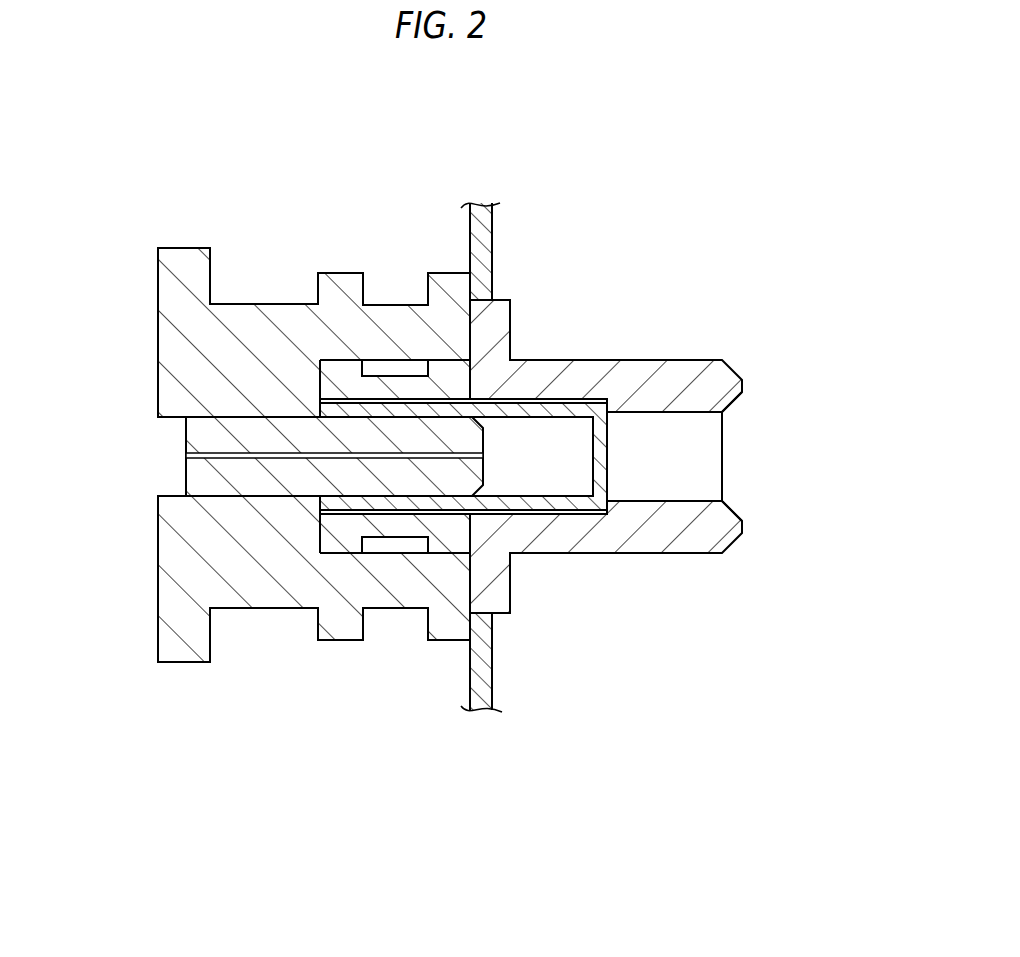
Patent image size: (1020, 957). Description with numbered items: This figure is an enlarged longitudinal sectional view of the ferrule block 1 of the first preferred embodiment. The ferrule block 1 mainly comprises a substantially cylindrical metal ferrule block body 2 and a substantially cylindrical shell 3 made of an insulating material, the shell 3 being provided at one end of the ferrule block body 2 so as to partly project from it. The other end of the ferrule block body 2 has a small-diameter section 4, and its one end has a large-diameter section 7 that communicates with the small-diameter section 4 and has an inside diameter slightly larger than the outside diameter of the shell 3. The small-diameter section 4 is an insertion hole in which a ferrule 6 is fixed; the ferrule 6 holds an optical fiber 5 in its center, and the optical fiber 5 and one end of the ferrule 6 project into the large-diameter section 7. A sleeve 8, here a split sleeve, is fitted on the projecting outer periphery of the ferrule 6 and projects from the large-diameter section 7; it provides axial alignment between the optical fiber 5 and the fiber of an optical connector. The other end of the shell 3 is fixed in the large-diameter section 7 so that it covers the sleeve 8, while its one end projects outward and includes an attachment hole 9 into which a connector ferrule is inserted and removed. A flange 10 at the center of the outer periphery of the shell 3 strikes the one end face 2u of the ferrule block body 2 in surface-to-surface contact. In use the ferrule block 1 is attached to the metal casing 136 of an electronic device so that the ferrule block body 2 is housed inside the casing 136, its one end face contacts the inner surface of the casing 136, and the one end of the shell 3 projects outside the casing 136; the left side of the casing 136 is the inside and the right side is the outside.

The ferrule block 1 is at (363, 488).
The ferrule block body 2 is at (363, 411).
The one end face (tip face) 2u is at (470, 589).
The shell 3 is at (691, 424).
The small-diameter section 4 is at (184, 419).
The optical fiber 5 is at (186, 477).
The ferrule 6 is at (264, 464).
The large-diameter section 7 is at (346, 360).
The sleeve 8 is at (577, 512).
The attachment hole 9 is at (742, 420).
The flange 10 is at (504, 324).
The casing 136 is at (495, 684).